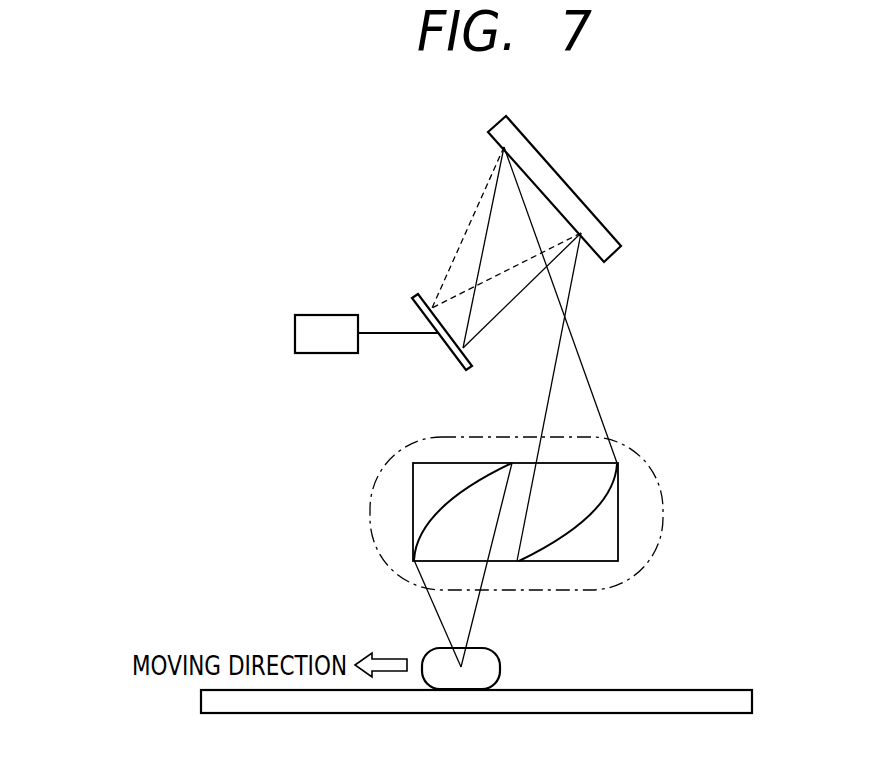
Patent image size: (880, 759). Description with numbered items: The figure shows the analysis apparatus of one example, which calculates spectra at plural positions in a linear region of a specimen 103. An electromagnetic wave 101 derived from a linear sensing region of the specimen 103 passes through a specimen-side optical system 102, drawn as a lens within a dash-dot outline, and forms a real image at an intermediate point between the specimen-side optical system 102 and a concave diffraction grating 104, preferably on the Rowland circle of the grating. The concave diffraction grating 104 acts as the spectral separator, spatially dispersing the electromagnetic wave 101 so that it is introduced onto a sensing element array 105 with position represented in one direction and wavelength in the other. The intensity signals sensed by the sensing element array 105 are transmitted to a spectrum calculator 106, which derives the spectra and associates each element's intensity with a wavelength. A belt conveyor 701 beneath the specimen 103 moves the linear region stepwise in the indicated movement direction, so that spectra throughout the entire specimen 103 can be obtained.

The electromagnetic wave 101 is at (435, 607).
The specimen-side optical system 102 is at (652, 470).
The specimen 103 is at (500, 668).
The concave diffraction grating 104 is at (604, 223).
The sensing element array 105 is at (412, 296).
The spectrum calculator 106 is at (322, 313).
The belt conveyor 701 is at (732, 690).